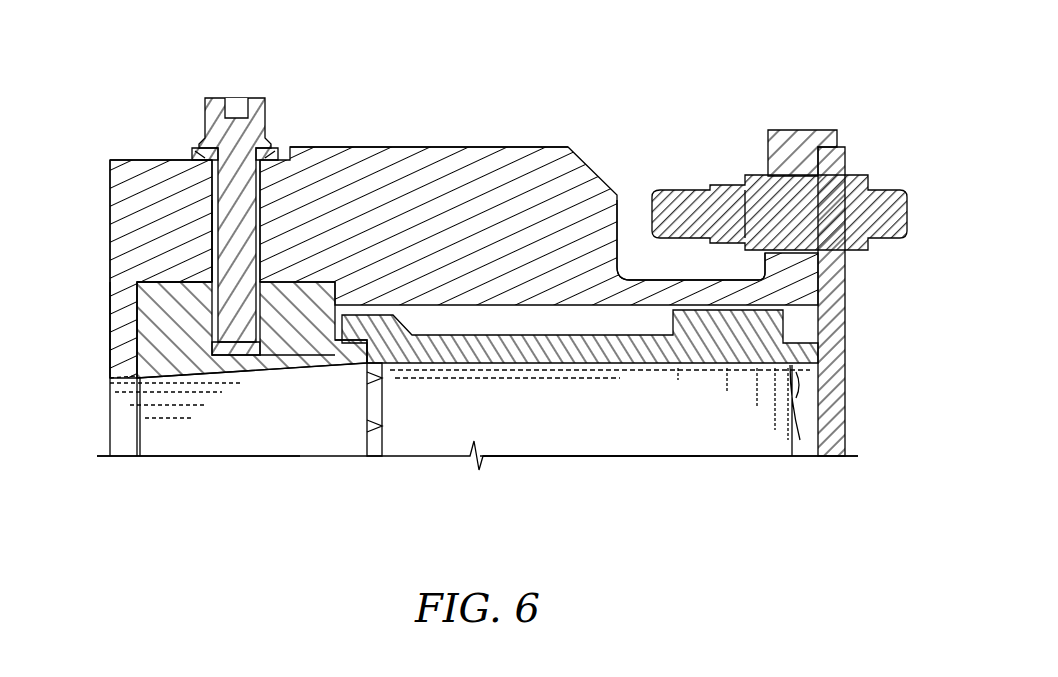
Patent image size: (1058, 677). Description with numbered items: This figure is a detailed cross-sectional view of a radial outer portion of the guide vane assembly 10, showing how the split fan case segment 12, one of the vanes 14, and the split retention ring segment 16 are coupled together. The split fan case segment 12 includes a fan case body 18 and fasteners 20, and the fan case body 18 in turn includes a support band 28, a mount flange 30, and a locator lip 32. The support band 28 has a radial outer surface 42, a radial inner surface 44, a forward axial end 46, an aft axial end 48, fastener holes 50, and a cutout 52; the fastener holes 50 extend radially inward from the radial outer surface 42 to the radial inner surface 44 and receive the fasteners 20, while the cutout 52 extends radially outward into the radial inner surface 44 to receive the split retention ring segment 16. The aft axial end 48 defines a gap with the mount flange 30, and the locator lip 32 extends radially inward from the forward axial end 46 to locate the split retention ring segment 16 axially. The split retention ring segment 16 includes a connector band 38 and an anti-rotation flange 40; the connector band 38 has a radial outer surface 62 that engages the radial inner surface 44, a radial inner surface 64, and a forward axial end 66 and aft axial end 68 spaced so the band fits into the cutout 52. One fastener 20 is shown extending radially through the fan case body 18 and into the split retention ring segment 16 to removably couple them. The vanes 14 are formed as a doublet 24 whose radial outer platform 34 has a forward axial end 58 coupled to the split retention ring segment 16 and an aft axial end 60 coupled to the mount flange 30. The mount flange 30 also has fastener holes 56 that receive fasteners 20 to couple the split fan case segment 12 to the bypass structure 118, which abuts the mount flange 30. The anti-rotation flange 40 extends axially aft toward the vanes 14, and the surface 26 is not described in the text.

The guide vane assembly 10 is at (115, 70).
The split fan case segment 12 is at (96, 142).
The vanes 14 is at (688, 520).
The split retention ring segment 16 is at (152, 462).
The fan case body 18 is at (346, 132).
The fasteners 20 is at (205, 133).
The doublet 24 is at (690, 478).
The flange surface 26 is at (237, 384).
The support band 28 is at (405, 152).
The mount flange 30 is at (786, 128).
The locator lip 32 is at (116, 362).
The radial outer platform 34 is at (598, 470).
The connector band 38 is at (156, 374).
The anti-rotation flange 40 is at (373, 368).
The radial outer surface 42 is at (148, 160).
The radial inner surface 44 is at (178, 282).
The forward axial end 46 is at (110, 302).
The aft axial end 48 is at (626, 233).
The fastener holes 50 is at (212, 207).
The cutout 52 is at (150, 292).
The fastener holes 56 is at (790, 234).
The forward axial end 58 is at (388, 372).
The aft axial end 60 is at (797, 380).
The radial outer surface 62 is at (150, 315).
The radial inner surface 64 is at (272, 372).
The forward axial end 66 is at (137, 356).
The aft axial end 68 is at (331, 356).
The bypass structure 118 is at (846, 356).